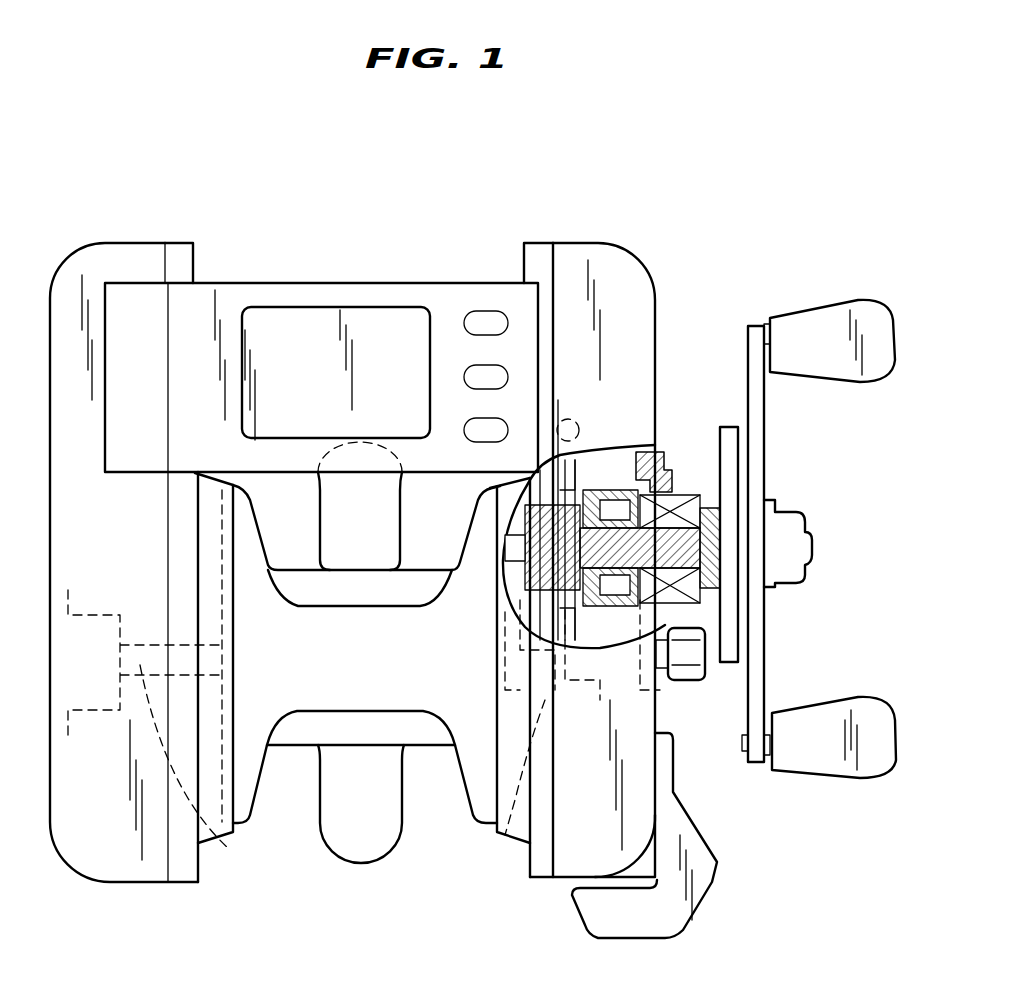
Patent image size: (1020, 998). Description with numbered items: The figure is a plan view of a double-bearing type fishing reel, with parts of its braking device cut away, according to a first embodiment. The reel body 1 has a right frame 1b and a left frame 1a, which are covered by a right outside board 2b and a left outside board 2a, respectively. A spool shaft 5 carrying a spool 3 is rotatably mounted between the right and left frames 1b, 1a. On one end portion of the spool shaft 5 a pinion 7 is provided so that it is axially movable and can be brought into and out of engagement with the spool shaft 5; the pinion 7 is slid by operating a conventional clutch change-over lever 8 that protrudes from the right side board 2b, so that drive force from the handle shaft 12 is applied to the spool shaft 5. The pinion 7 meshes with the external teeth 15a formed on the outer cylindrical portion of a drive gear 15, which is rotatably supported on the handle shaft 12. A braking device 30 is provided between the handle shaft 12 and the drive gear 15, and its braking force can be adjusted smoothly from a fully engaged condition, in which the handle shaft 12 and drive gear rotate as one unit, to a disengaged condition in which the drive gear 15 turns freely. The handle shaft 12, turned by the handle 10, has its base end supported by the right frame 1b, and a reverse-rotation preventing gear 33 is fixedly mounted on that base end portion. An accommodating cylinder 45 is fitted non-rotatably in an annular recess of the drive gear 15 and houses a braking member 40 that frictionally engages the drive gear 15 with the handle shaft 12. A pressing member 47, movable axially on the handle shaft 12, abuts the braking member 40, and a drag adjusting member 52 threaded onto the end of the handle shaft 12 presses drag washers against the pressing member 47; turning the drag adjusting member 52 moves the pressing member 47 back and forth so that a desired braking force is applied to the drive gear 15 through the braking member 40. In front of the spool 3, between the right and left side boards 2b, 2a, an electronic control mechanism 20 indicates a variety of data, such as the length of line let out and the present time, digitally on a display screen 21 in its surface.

The reel body 1 is at (640, 168).
The left frame 1a is at (182, 250).
The right frame 1b is at (536, 252).
The left outside board 2a is at (128, 246).
The right outside board 2b is at (640, 266).
The spool 3 is at (298, 698).
The spool shaft 5 is at (220, 835).
The pinion 7 is at (512, 838).
The clutch change-over lever 8 is at (694, 888).
The handle 10 is at (814, 320).
The handle shaft 12 is at (706, 535).
The drive gear 15 is at (618, 478).
The external teeth 15a is at (592, 455).
The electronic control mechanism 20 is at (328, 282).
The display screen 21 is at (404, 307).
The braking device 30 is at (716, 668).
The reverse-rotation preventing gear 33 is at (492, 732).
The braking member 40 is at (640, 468).
The accommodating cylinder 45 is at (700, 652).
The pressing member 47 is at (712, 495).
The drag adjusting member 52 is at (734, 448).